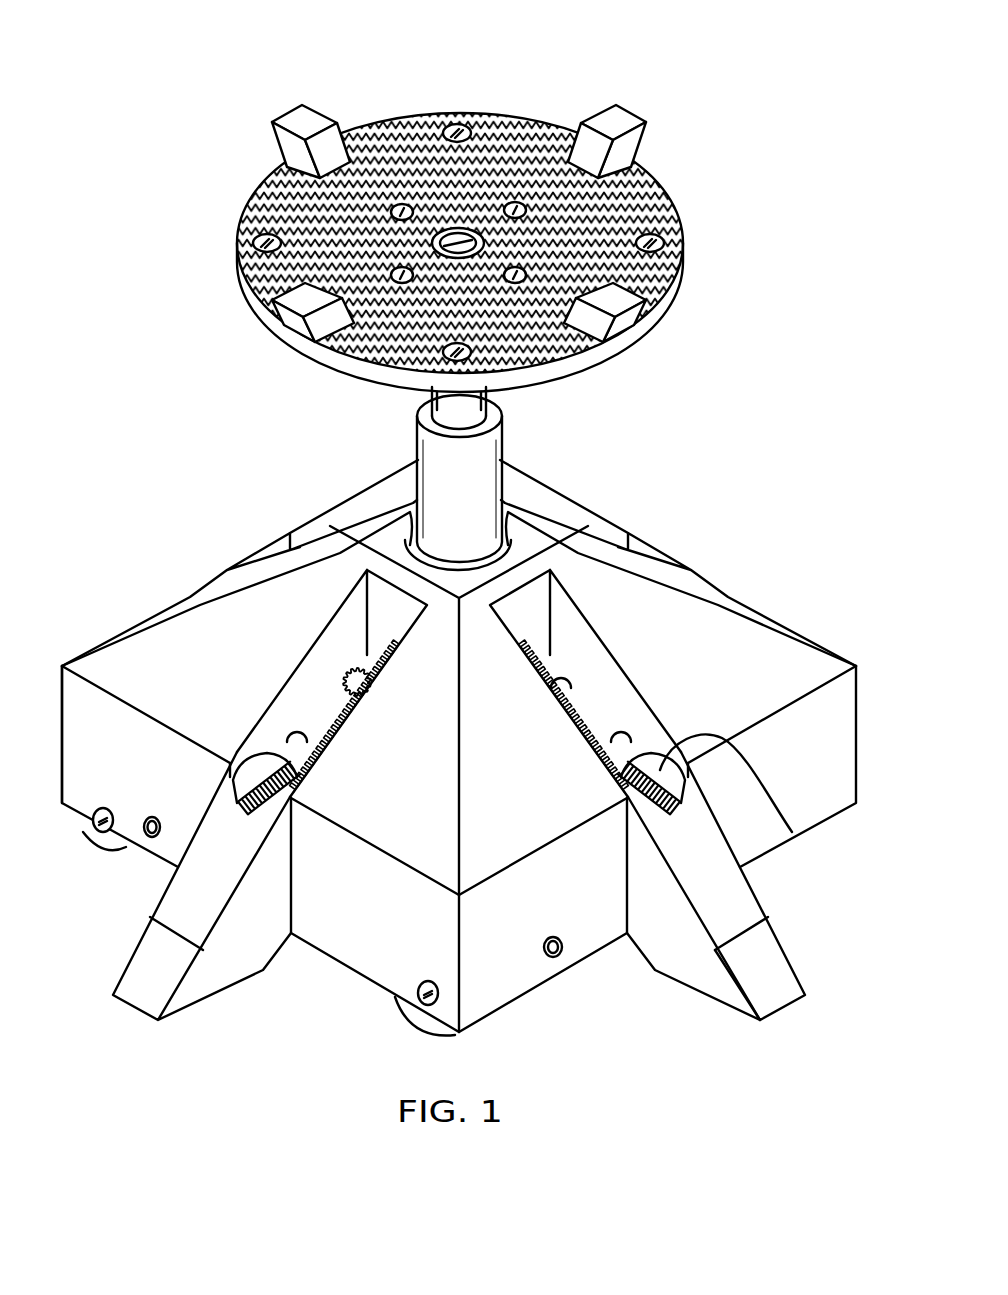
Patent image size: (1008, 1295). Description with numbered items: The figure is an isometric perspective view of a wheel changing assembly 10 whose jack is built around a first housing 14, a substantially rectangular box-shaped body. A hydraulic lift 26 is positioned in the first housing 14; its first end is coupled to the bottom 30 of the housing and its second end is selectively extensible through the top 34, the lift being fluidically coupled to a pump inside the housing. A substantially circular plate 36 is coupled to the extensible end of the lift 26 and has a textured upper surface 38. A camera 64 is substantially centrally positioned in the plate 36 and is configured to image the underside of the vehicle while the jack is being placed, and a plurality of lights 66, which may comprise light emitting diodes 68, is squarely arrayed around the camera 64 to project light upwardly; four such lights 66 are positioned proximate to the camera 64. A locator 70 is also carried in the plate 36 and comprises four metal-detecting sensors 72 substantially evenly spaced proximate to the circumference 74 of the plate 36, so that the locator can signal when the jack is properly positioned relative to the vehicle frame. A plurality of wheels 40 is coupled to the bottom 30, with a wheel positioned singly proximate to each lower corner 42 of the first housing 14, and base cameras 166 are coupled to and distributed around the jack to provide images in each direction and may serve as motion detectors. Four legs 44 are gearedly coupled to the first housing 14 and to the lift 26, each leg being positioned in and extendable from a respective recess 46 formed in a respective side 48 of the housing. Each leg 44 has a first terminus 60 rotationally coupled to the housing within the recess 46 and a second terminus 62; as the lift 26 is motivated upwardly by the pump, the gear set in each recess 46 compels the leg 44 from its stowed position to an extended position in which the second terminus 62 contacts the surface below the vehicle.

The wheel changing assembly 10 is at (784, 338).
The first housing 14 is at (857, 710).
The lift 26 is at (497, 453).
The bottom 30 is at (272, 797).
The top 34 is at (530, 543).
The plate 36 is at (658, 181).
The upper surface 38 is at (526, 132).
The wheels 40 is at (63, 805).
The lower corner 42 is at (95, 836).
The leg 44 is at (730, 907).
The recess 46 is at (600, 680).
The side 48 is at (492, 943).
The first terminus 60 is at (785, 828).
The second terminus 62 is at (700, 995).
The camera 64 is at (453, 230).
The lights 66 is at (402, 283).
The light emitting diodes 68 is at (402, 205).
The locator 70 is at (263, 236).
The sensors 72 is at (461, 122).
The circumference 74 is at (664, 281).
The base cameras 166 is at (150, 835).